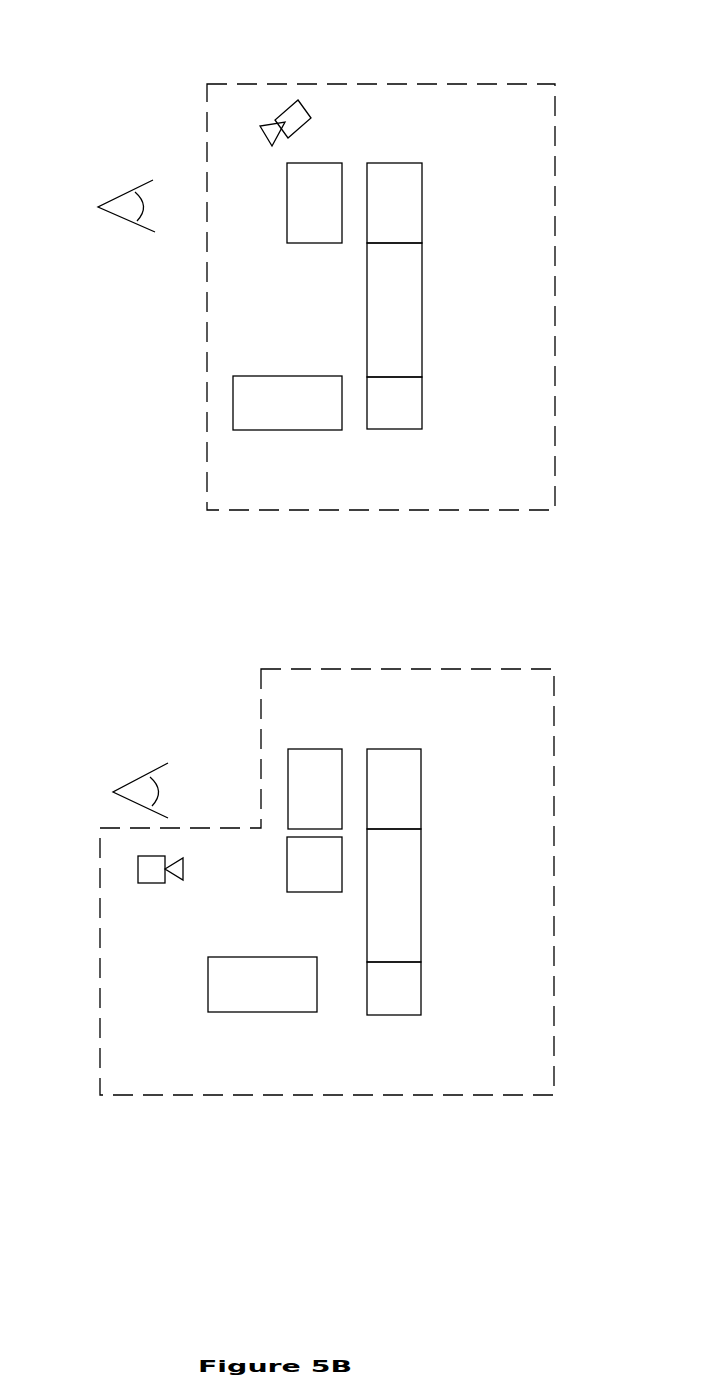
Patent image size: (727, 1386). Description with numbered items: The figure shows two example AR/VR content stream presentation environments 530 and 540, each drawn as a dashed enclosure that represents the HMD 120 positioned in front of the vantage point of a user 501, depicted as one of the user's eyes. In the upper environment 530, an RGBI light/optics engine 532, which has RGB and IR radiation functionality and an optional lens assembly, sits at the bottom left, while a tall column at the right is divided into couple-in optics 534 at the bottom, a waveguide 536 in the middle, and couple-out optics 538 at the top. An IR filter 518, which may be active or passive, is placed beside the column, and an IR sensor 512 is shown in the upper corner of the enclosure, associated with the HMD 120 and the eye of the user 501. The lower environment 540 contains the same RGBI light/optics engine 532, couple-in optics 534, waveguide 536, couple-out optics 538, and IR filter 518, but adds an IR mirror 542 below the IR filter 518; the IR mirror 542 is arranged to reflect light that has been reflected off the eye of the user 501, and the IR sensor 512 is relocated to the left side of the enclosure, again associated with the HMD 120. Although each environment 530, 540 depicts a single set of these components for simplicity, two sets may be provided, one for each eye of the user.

The AR/VR content stream presentation environment 530 is at (160, 40).
The AR/VR content stream presentation environment 540 is at (203, 634).
The user 501 is at (127, 493).
The IR sensor 512 is at (276, 528).
The IR filter 518 is at (313, 496).
The couple-out optics 538 is at (435, 494).
The waveguide 536 is at (439, 602).
The couple-in optics 534 is at (437, 696).
The RGBI light/optics engine 532 is at (275, 721).
The IR mirror 542 is at (313, 889).
The HMD 120 is at (555, 307).